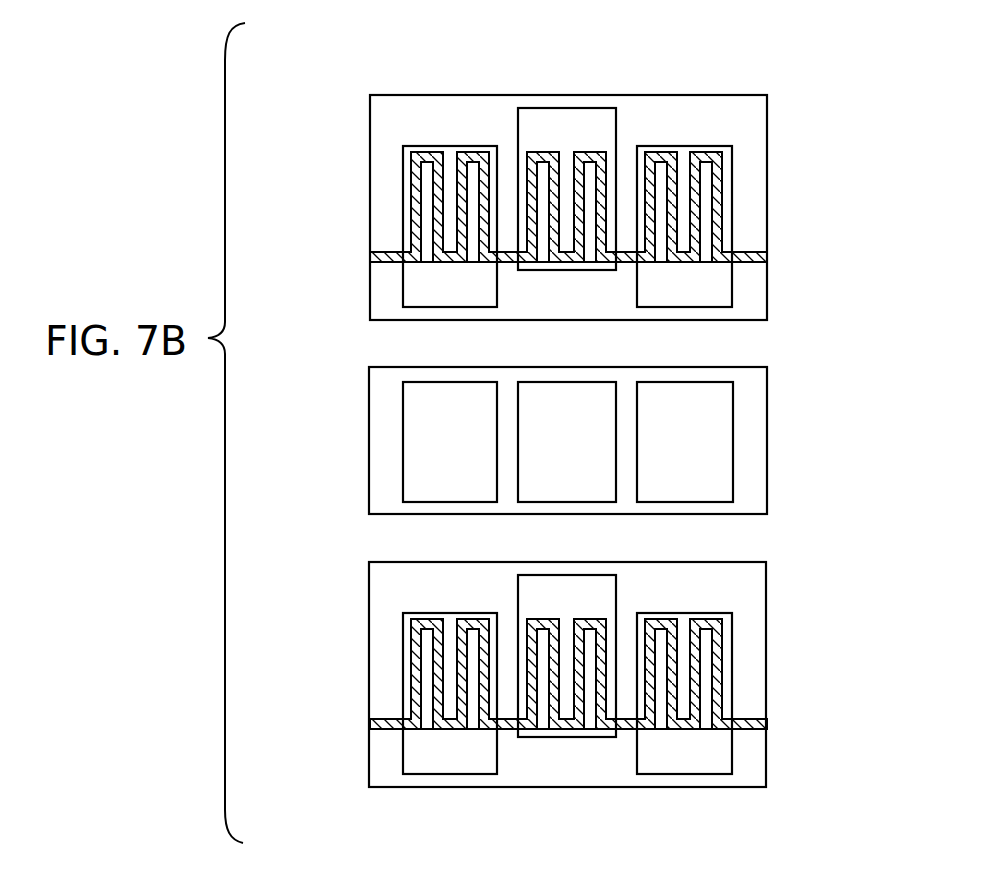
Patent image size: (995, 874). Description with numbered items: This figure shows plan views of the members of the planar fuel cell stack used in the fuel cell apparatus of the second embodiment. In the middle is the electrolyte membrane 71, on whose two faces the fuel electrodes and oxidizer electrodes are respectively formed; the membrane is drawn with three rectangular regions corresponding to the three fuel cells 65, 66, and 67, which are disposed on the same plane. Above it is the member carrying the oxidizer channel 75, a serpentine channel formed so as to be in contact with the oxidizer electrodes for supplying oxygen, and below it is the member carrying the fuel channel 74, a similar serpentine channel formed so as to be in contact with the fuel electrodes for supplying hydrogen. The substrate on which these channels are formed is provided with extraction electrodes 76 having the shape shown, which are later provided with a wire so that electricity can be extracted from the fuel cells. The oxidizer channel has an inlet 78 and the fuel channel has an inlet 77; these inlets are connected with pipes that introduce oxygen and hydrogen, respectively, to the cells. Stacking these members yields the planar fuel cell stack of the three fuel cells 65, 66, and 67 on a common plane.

The fuel cell 65 is at (446, 387).
The fuel cell 66 is at (566, 387).
The fuel cell 67 is at (683, 387).
The electrolyte membrane 71 is at (378, 453).
The fuel channel 74 is at (720, 667).
The oxidizer channel 75 is at (718, 200).
The extraction electrodes 76 is at (450, 148).
The inlet of the fuel channel 77 is at (370, 720).
The inlet of the oxidizer channel 78 is at (368, 257).